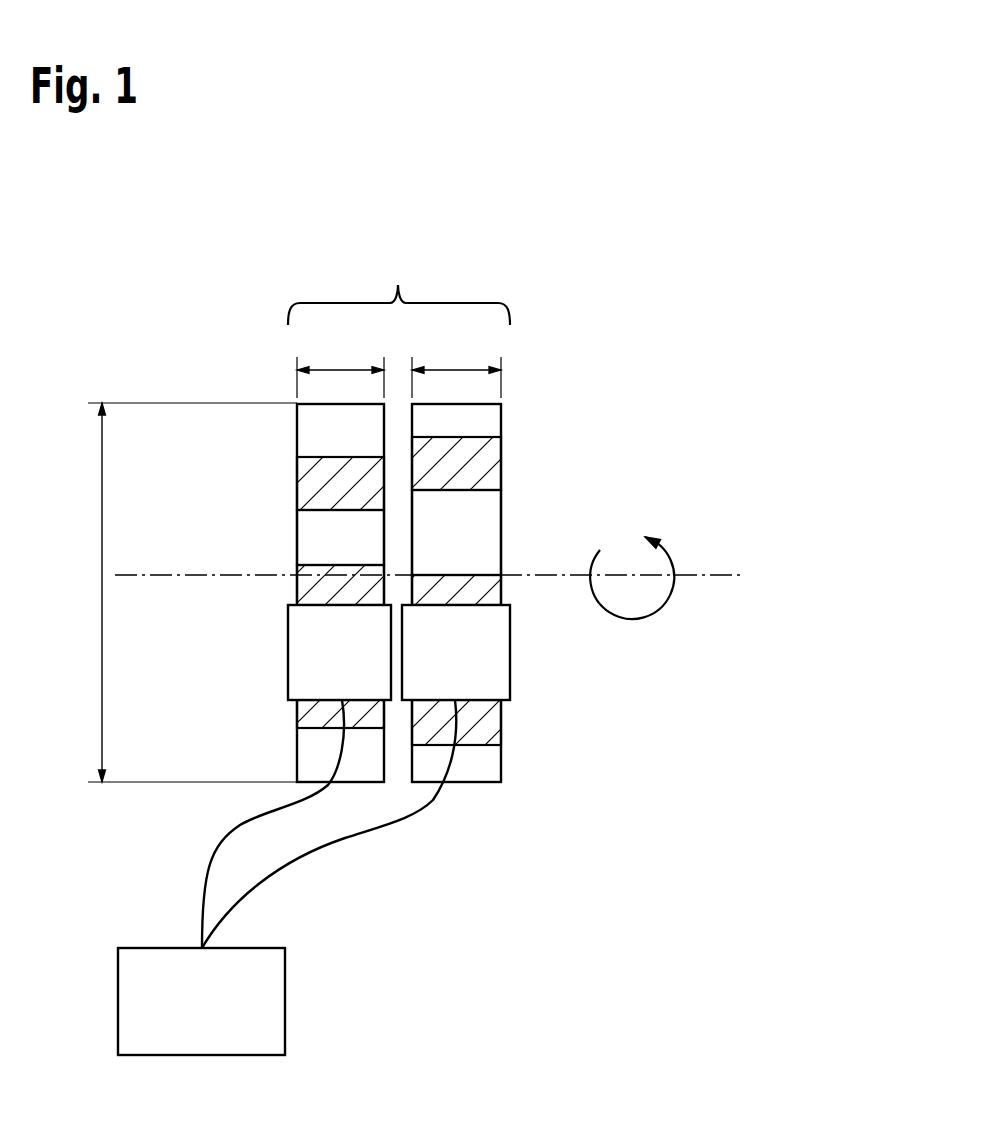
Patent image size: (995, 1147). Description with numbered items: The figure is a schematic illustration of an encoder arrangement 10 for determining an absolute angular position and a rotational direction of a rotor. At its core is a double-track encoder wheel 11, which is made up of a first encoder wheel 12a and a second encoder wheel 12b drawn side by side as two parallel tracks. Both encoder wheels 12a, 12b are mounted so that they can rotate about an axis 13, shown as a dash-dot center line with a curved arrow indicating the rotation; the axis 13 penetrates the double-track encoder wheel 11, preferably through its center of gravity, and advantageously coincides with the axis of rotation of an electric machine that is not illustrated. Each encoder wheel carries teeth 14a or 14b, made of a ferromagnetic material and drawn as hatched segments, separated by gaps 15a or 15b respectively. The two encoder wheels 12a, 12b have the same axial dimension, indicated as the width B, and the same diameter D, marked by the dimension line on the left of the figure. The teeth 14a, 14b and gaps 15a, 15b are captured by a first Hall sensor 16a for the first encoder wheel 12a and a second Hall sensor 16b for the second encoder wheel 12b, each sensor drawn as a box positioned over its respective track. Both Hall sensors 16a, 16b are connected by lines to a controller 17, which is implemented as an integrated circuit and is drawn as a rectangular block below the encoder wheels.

The encoder arrangement 10 is at (590, 222).
The double-track encoder wheel 11 is at (399, 282).
The first encoder wheel 12a is at (262, 524).
The second encoder wheel 12b is at (533, 524).
The axis 13 is at (753, 570).
The teeth 14a is at (283, 487).
The teeth 14b is at (513, 463).
The gaps 15a is at (283, 547).
The gaps 15b is at (513, 533).
The first Hall sensor 16a is at (275, 670).
The second Hall sensor 16b is at (520, 670).
The controller 17 is at (285, 998).